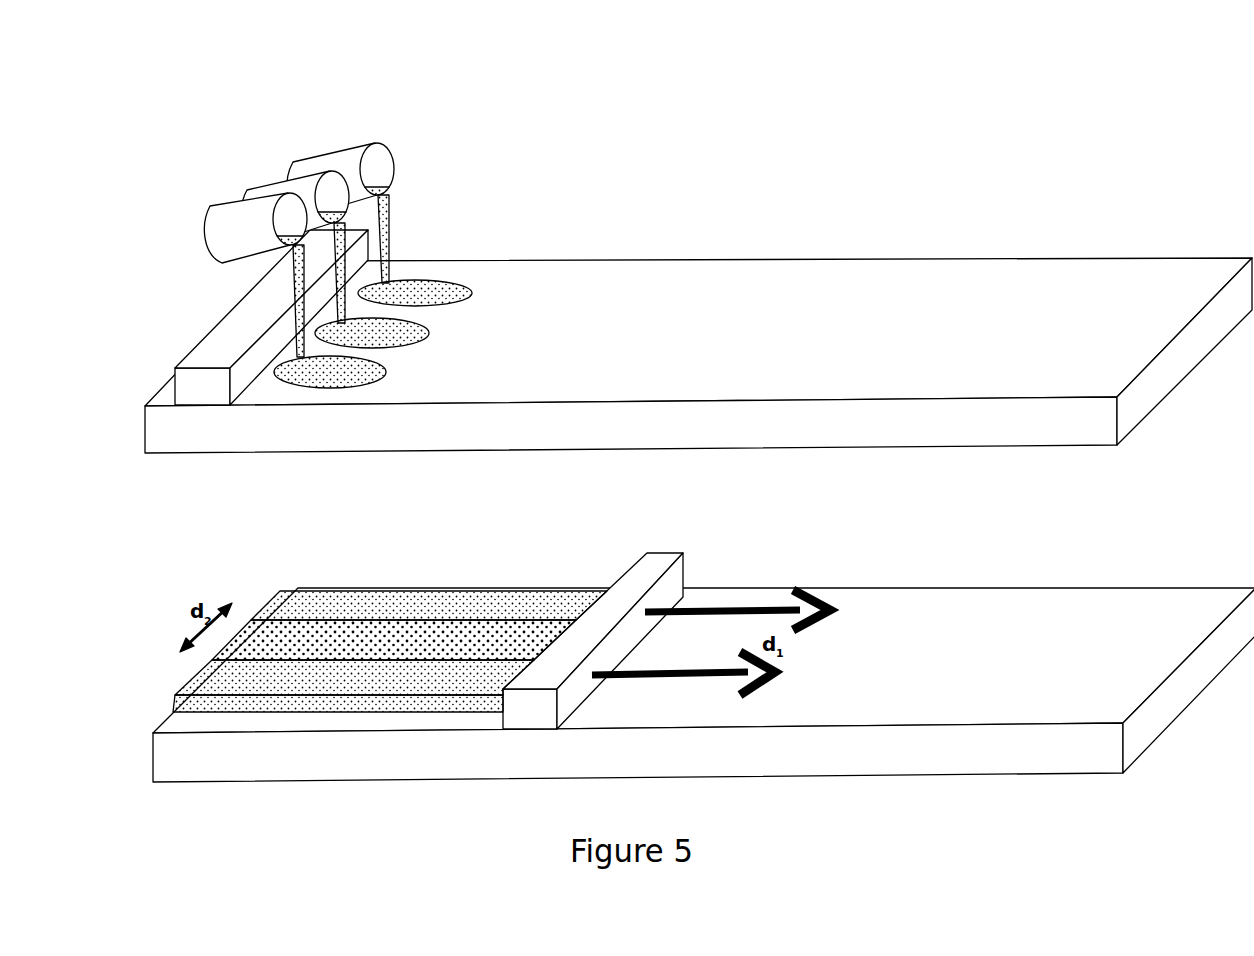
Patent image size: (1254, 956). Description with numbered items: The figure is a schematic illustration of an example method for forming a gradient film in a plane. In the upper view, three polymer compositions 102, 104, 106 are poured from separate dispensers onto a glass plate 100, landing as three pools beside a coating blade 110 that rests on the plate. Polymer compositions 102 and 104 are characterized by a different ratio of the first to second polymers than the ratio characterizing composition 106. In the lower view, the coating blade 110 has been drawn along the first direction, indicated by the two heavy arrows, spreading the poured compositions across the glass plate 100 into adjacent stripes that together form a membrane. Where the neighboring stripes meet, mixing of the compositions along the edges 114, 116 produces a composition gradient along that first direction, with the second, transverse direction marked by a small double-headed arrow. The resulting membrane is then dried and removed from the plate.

The glass plate 100 is at (838, 258).
The polymer composition 102 is at (207, 223).
The polymer composition 104 is at (337, 150).
The polymer composition 106 is at (279, 181).
The coating blade 110 is at (227, 324).
The edge 114 is at (322, 660).
The edge 116 is at (417, 613).